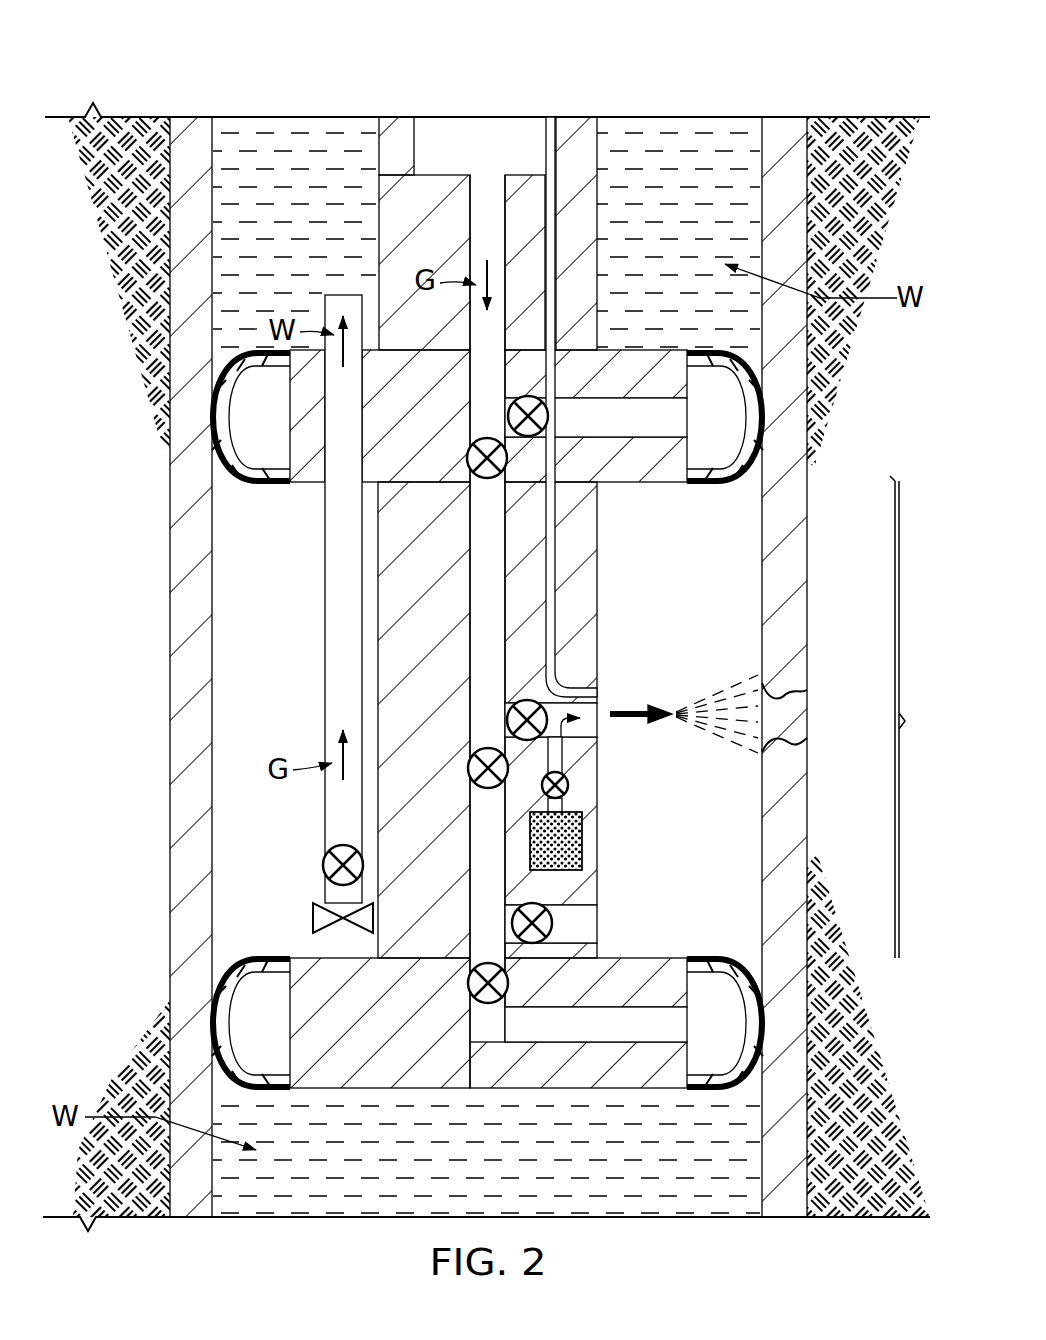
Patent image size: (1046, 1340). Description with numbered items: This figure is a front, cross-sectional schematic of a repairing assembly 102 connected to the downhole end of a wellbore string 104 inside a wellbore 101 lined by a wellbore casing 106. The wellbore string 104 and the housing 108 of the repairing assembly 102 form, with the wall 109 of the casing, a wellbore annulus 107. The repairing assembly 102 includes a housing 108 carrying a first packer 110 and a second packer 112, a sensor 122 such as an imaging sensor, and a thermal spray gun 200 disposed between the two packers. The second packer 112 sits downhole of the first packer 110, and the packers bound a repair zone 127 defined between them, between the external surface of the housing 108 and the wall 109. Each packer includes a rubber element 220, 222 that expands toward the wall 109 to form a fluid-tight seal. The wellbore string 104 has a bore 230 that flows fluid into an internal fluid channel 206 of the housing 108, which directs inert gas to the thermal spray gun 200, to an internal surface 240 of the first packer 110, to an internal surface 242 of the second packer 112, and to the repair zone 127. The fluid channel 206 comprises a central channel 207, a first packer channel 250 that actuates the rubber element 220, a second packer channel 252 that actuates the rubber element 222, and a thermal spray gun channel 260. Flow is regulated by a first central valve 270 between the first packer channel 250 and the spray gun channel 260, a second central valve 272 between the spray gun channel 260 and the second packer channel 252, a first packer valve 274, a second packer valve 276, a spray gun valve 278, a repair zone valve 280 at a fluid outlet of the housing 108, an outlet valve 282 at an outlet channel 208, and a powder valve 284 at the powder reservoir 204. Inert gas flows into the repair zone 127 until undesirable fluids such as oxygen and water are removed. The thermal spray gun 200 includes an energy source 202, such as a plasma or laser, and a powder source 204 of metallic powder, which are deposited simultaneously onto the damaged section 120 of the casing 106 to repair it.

The wellbore 101 is at (170, 420).
The repairing assembly 102 is at (261, 66).
The wellbore string 104 is at (414, 157).
The wellbore casing 106 is at (170, 486).
The wellbore annulus 107 is at (212, 830).
The housing 108 is at (390, 655).
The wall 109 is at (212, 640).
The first packer 110 is at (270, 483).
The second packer 112 is at (212, 960).
The damaged section 120 is at (807, 712).
The sensor 122 is at (313, 918).
The repair zone 127 is at (920, 717).
The thermal spray gun 200 is at (640, 678).
The energy source 202 is at (557, 565).
The powder source 204 is at (585, 838).
The internal fluid channel 206 is at (505, 733).
The central channel 207 is at (470, 636).
The outlet channel 208 is at (325, 596).
The rubber element 220 is at (703, 484).
The rubber element 222 is at (762, 966).
The bore 230 is at (437, 126).
The internal surface 240 is at (648, 438).
The internal surface 242 is at (498, 1024).
The first packer channel 250 is at (645, 400).
The second packer channel 252 is at (633, 1010).
The thermal spray gun channel 260 is at (590, 728).
The first central valve 270 is at (467, 458).
The second central valve 272 is at (468, 768).
The first packer valve 274 is at (508, 416).
The second packer valve 276 is at (467, 983).
The spray gun valve 278 is at (508, 718).
The repair zone valve 280 is at (553, 925).
The outlet valve 282 is at (323, 865).
The powder valve 284 is at (568, 785).